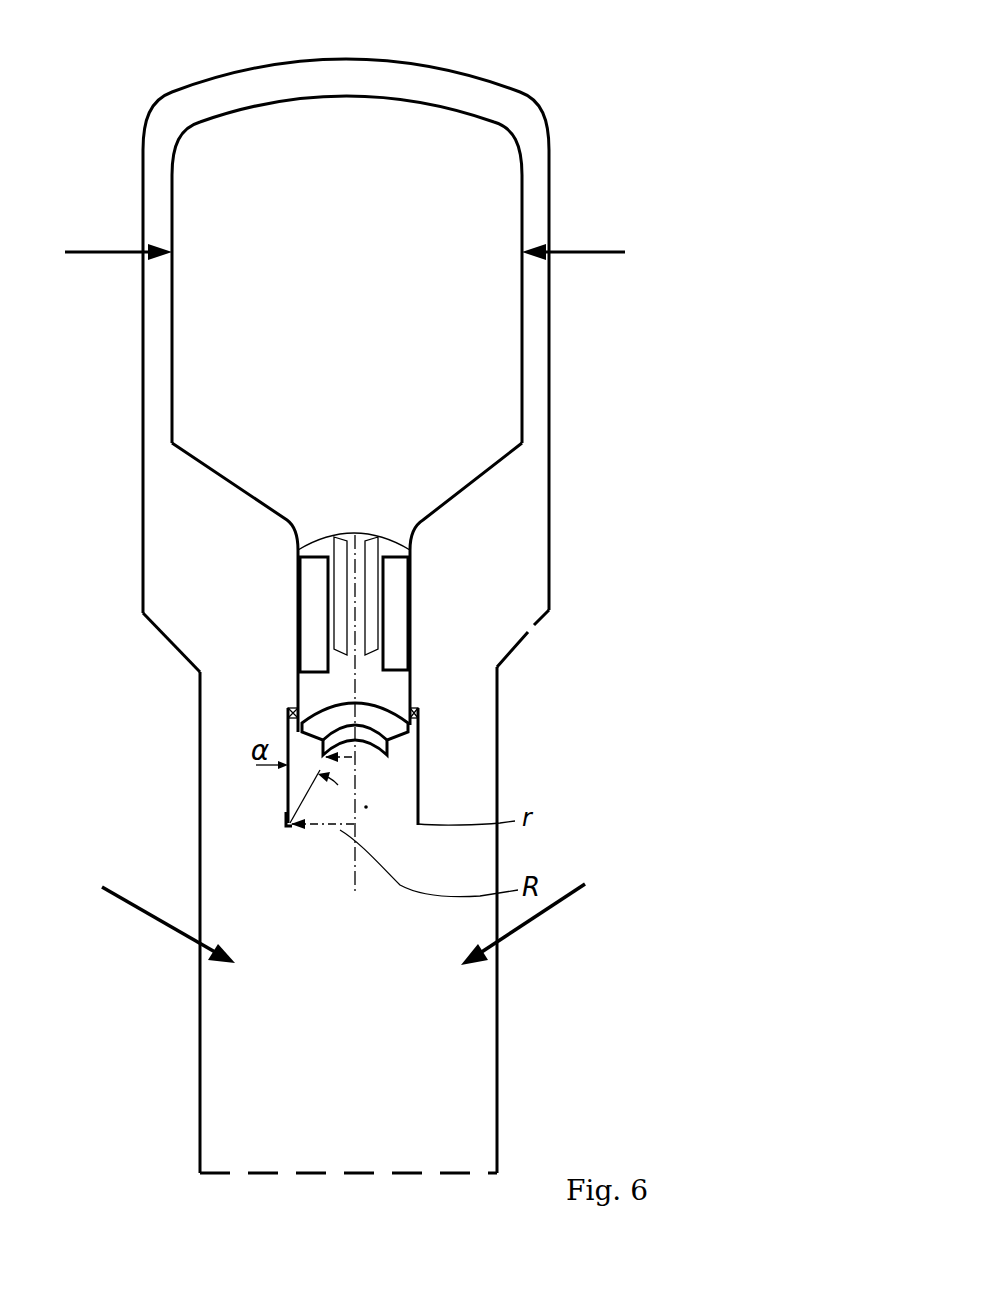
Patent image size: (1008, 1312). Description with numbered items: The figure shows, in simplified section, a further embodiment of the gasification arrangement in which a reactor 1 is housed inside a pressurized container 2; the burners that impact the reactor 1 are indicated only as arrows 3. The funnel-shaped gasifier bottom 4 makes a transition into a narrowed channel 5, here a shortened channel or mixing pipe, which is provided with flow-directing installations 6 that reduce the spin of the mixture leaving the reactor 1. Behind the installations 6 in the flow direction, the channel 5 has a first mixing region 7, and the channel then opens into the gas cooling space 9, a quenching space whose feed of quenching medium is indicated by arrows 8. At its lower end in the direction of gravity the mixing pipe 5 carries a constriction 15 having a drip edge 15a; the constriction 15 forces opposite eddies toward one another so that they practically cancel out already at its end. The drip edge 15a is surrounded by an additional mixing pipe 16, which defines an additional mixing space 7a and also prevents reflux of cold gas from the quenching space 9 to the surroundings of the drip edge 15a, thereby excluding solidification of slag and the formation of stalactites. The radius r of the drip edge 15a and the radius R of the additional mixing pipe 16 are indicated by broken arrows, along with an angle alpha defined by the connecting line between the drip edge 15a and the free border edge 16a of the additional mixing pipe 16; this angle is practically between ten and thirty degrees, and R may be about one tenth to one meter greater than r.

The reactor 1 is at (502, 133).
The pressurized container 2 is at (550, 213).
The arrows 3 is at (572, 250).
The funnel-shaped gasifier bottom 4 is at (490, 472).
The narrowed channel 5 is at (413, 587).
The flow-directing installations 6 is at (400, 633).
The first mixing region 7 is at (373, 685).
The additional mixing space 7a is at (366, 807).
The arrows 8 is at (568, 898).
The gas cooling space 9 is at (408, 1100).
The constriction 15 is at (390, 741).
The drip edge 15a is at (388, 757).
The additional mixing pipe 16 is at (418, 788).
The free border edge 16a is at (278, 825).